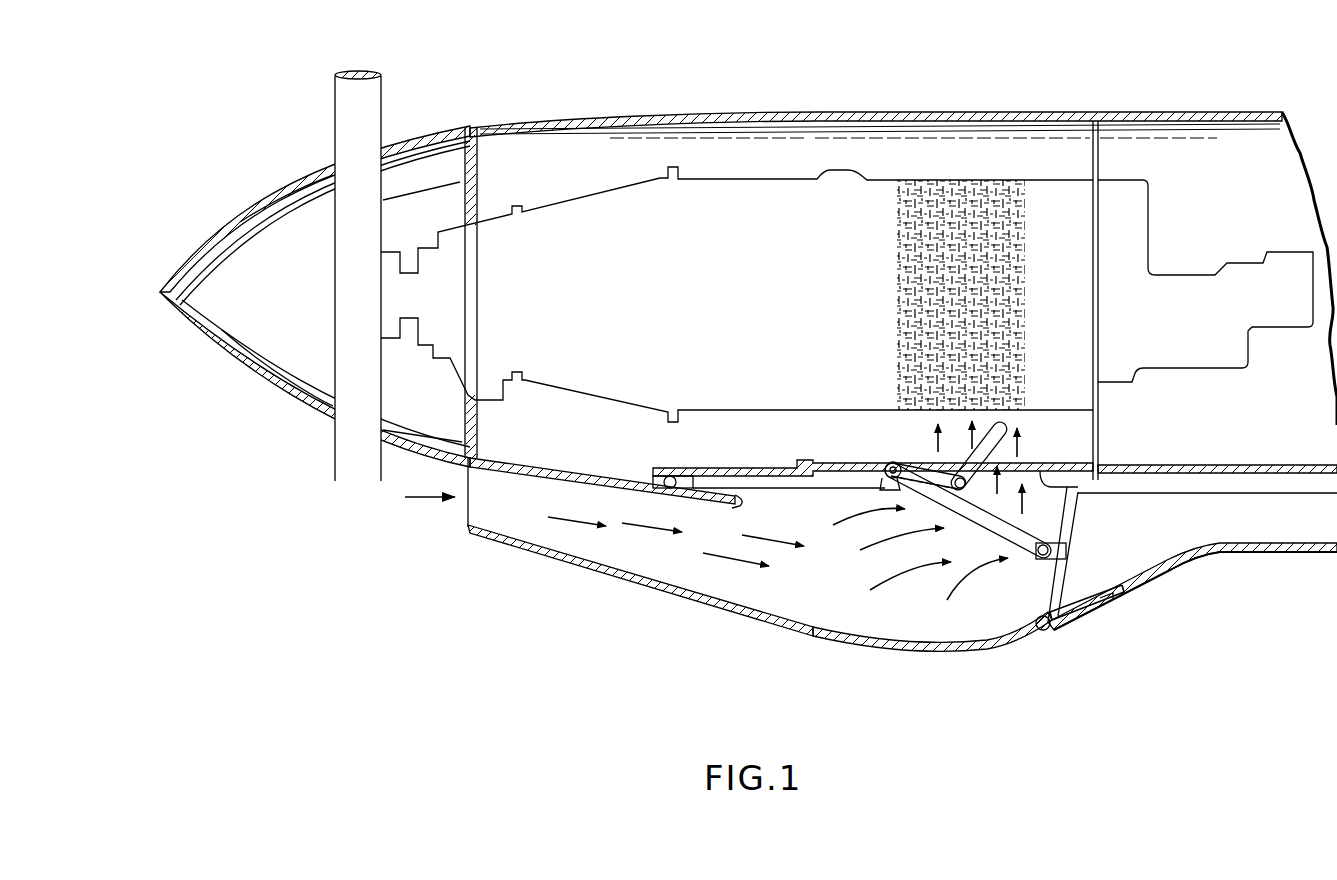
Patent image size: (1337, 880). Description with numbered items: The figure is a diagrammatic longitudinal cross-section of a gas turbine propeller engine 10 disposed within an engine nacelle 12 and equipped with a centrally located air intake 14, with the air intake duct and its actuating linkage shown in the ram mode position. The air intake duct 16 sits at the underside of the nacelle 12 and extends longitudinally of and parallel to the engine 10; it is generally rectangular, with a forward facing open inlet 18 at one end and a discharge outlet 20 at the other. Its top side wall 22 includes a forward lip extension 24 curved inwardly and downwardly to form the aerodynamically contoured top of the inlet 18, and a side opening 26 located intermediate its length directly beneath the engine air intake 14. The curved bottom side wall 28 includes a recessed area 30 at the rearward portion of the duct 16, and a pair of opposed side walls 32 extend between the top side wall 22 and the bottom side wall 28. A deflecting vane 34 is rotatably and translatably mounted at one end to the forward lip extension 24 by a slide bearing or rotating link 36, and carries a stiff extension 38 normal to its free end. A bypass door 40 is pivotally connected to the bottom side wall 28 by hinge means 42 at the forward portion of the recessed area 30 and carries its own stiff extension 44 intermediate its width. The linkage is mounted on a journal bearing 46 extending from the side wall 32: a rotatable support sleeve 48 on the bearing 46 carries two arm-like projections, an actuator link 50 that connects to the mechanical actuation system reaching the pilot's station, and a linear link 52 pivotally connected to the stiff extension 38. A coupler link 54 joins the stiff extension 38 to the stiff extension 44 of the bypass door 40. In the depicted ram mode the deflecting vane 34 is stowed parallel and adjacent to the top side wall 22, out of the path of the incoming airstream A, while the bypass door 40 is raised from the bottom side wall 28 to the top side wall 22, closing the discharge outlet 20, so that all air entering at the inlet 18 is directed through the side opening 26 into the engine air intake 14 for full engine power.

The gas turbine propeller engine 10 is at (680, 185).
The engine nacelle 12 is at (575, 118).
The air intake 14 is at (970, 195).
The air intake duct 16 is at (562, 567).
The forward facing open inlet 18 is at (476, 514).
The discharge outlet 20 is at (1306, 548).
The top side wall 22 is at (745, 450).
The forward lip extension 24 is at (738, 504).
The side opening 26 is at (1060, 468).
The bottom side wall 28 is at (905, 648).
The recessed area 30 is at (1162, 582).
The side walls 32 is at (836, 592).
The deflecting vane 34 is at (833, 487).
The slide bearing or rotating link 36 is at (667, 476).
The stiff extension 38 is at (886, 488).
The bypass door 40 is at (1075, 525).
The hinge means 42 is at (1032, 640).
The stiff extension 44 is at (1062, 551).
The journal bearing 46 is at (960, 478).
The rotatable support sleeve 48 is at (965, 512).
The actuator link 50 is at (1000, 432).
The linear link 52 is at (922, 468).
The coupler link 54 is at (1020, 568).
The incoming airstream A is at (432, 508).